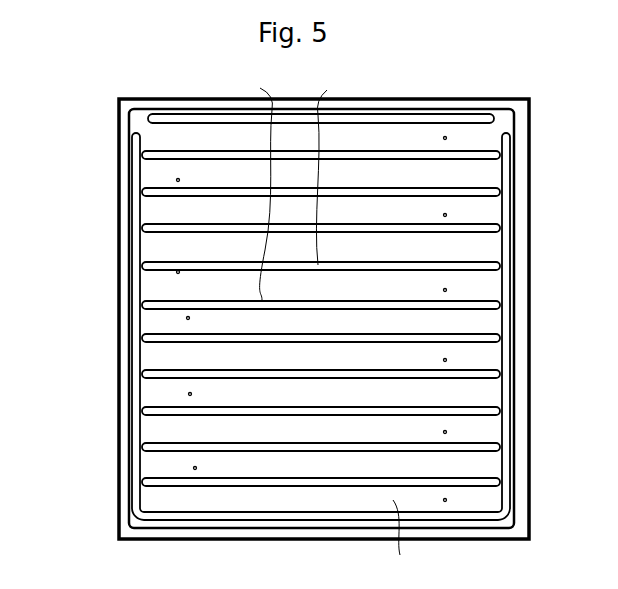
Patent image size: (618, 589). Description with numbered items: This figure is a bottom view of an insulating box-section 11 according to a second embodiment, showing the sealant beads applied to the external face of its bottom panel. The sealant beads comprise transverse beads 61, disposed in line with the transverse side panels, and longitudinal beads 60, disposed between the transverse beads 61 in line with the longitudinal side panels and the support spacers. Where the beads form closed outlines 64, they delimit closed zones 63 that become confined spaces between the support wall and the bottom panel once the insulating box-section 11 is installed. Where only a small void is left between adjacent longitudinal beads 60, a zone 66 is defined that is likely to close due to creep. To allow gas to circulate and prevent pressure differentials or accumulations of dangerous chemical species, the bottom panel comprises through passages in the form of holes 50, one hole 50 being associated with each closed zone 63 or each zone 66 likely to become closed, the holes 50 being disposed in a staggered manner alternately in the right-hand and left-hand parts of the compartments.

The insulating box-section 11 is at (80, 105).
The hole 50 is at (445, 138).
The longitudinal bead 60 is at (383, 100).
The transverse bead 61 is at (503, 107).
The closed zone 63 is at (160, 243).
The closed outline 64 is at (334, 322).
The zone likely to become closed 66 is at (187, 140).